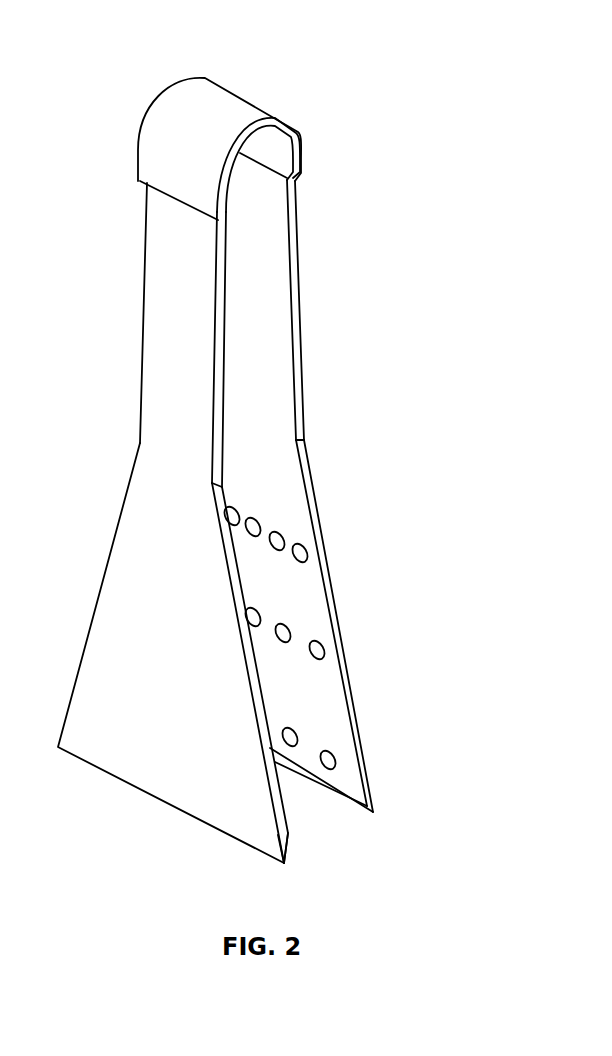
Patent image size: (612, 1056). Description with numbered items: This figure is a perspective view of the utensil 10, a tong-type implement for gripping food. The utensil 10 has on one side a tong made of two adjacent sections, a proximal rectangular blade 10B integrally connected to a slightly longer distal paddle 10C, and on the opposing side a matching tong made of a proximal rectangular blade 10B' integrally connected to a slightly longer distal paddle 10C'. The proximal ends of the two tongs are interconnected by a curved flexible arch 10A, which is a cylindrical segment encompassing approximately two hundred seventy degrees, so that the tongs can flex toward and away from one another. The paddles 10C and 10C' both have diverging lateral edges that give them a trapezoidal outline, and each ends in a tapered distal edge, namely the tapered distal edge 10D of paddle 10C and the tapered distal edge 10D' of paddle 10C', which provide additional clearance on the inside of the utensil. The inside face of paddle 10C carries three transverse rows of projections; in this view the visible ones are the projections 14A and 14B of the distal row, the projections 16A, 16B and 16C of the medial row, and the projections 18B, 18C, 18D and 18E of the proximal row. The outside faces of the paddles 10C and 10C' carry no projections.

The utensil 10 is at (132, 227).
The curved flexible arch 10A is at (170, 90).
The proximal rectangular blade 10B is at (331, 310).
The proximal rectangular blade 10B' is at (145, 335).
The distal paddle 10C is at (369, 626).
The distal paddle 10C' is at (162, 653).
The tapered distal edge 10D is at (373, 795).
The tapered distal edge 10D' is at (324, 855).
The projection 14A is at (333, 752).
The projection 14B is at (296, 728).
The projection 16A is at (318, 641).
The projection 16B is at (287, 624).
The projection 16C is at (255, 607).
The projection 18B is at (236, 507).
The projection 18C is at (257, 519).
The projection 18D is at (280, 532).
The projection 18E is at (305, 544).